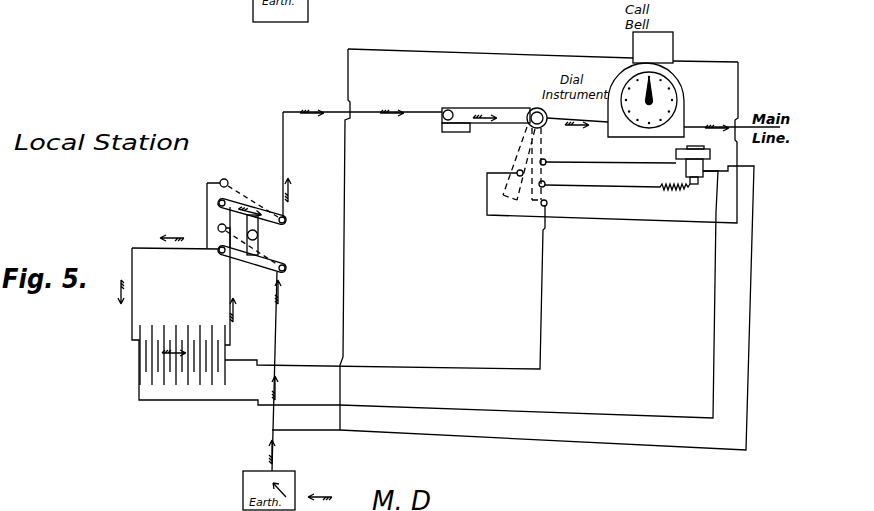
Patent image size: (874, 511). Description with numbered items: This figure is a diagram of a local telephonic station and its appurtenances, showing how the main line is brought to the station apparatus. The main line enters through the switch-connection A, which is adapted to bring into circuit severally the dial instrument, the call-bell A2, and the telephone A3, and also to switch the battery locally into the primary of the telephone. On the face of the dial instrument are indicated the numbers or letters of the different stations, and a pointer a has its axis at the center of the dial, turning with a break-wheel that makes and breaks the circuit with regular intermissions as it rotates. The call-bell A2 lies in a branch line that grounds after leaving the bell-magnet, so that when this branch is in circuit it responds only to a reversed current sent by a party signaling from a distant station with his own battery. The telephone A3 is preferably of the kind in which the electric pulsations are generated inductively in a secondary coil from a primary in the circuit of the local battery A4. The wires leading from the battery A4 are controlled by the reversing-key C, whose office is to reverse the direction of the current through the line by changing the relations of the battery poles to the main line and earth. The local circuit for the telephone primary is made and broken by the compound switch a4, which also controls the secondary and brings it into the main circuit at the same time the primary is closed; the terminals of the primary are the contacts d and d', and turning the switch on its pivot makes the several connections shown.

The switch-connection A is at (531, 108).
The call-bell A2 is at (653, 47).
The telephone A3 is at (679, 165).
The local battery A4 is at (182, 357).
The pointer a is at (654, 92).
The compound switch a4 is at (485, 154).
The reversing-key C is at (366, 191).
The terminal of the primary d is at (549, 178).
The terminal of the primary d' is at (554, 201).